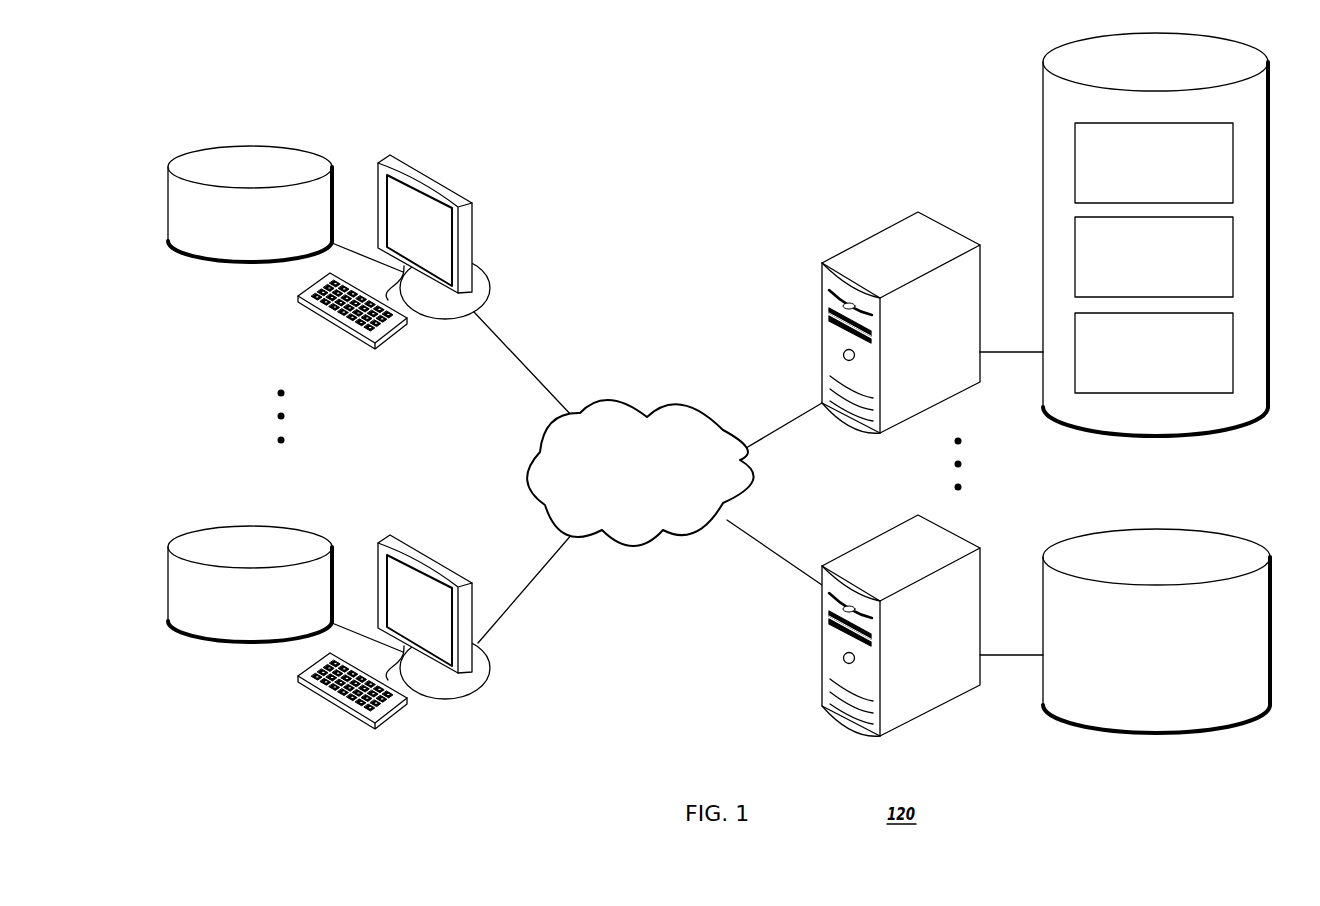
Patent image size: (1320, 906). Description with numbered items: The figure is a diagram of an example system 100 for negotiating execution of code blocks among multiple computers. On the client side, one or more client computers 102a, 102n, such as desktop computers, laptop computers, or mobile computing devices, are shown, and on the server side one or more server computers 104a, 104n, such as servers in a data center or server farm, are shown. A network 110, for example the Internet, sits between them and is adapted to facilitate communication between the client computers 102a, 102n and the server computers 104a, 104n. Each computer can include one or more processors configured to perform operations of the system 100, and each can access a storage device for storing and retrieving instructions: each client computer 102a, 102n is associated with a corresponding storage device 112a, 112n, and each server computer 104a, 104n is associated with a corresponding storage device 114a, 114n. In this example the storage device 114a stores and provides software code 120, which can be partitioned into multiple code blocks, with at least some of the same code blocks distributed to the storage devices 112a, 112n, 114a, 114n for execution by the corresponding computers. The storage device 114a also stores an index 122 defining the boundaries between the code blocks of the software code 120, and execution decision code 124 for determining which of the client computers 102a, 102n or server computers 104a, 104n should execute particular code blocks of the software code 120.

The system 100 is at (565, 78).
The client computer 102a is at (464, 196).
The client computer 102n is at (406, 632).
The server computer 104a is at (842, 252).
The server computer 104n is at (880, 625).
The network 110 is at (624, 521).
The storage device 112a is at (203, 150).
The storage device 112n is at (238, 570).
The storage device 114a is at (1042, 115).
The storage device 114n is at (1066, 536).
The software code 120 is at (1217, 194).
The index 122 is at (1217, 289).
The execution decision code 124 is at (1217, 386).